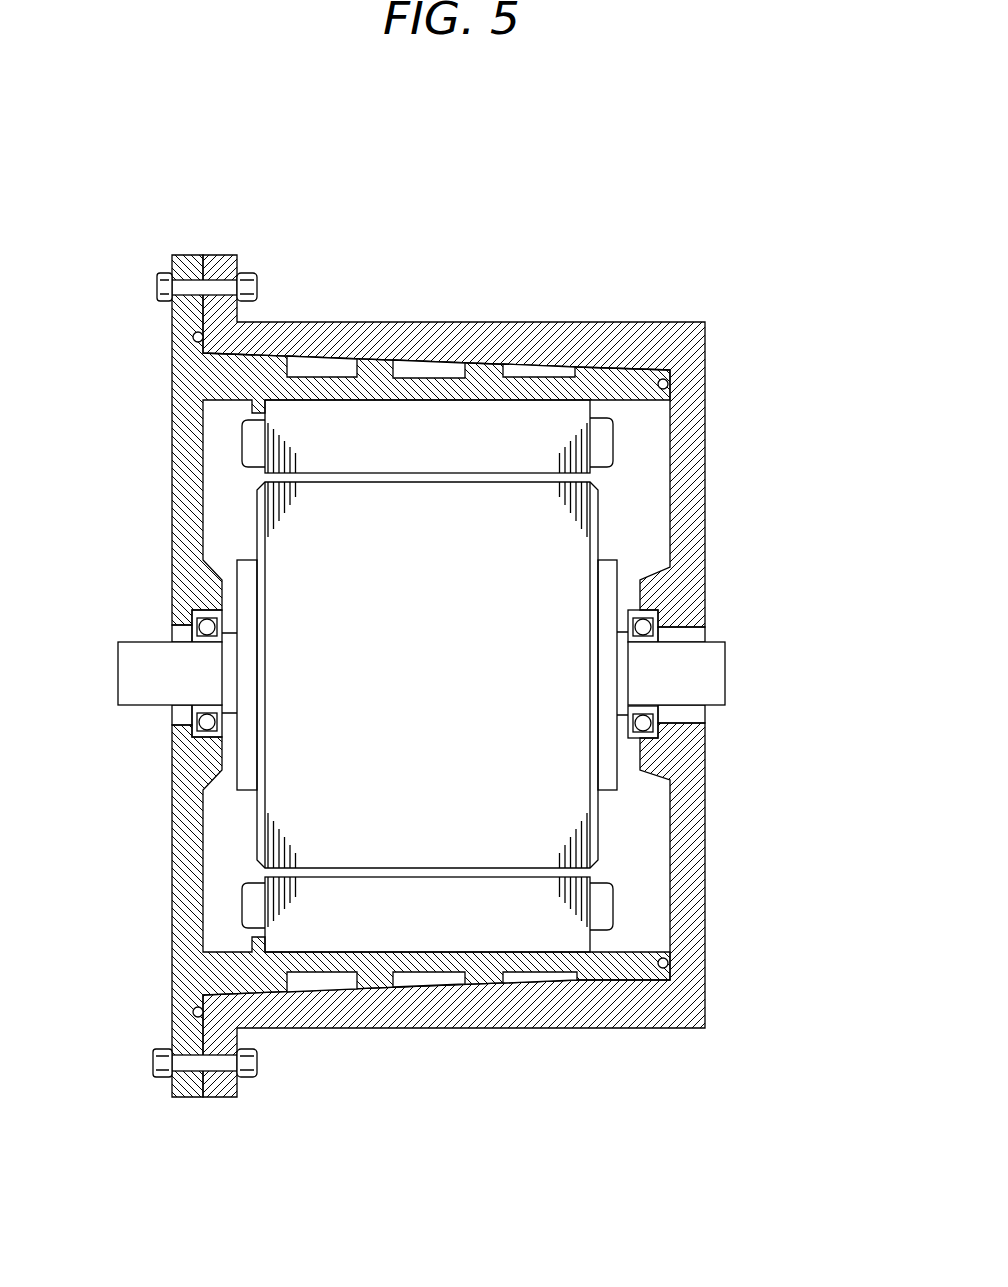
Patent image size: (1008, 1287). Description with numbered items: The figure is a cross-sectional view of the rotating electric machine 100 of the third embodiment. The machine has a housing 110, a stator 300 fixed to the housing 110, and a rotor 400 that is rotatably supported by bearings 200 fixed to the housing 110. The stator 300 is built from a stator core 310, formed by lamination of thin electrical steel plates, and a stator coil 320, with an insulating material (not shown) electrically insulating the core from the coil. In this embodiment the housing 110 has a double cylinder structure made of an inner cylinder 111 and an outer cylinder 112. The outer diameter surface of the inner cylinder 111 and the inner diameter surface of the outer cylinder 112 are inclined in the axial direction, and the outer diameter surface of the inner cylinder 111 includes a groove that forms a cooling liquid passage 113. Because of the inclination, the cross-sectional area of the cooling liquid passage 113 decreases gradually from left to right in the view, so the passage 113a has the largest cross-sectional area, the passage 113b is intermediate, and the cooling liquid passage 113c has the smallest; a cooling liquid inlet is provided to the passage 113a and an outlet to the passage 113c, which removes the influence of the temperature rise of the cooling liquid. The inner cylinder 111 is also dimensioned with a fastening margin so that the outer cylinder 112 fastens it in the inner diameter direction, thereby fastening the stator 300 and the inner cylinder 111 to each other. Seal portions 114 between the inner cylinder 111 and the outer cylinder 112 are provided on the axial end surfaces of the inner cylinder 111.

The rotating electric machine 100 is at (460, 598).
The housing 110 is at (710, 230).
The inner cylinder 111 is at (588, 380).
The outer cylinder 112 is at (540, 343).
The cooling liquid passage 113 is at (565, 252).
The passage 113a is at (322, 370).
The cooling liquid passage 113b is at (425, 370).
The cooling liquid passage 113c is at (533, 367).
The seal portion 114 is at (192, 341).
The bearing 200 is at (192, 620).
The stator 300 is at (775, 465).
The stator core 310 is at (505, 440).
The stator coil 320 is at (605, 458).
The rotor 400 is at (602, 835).